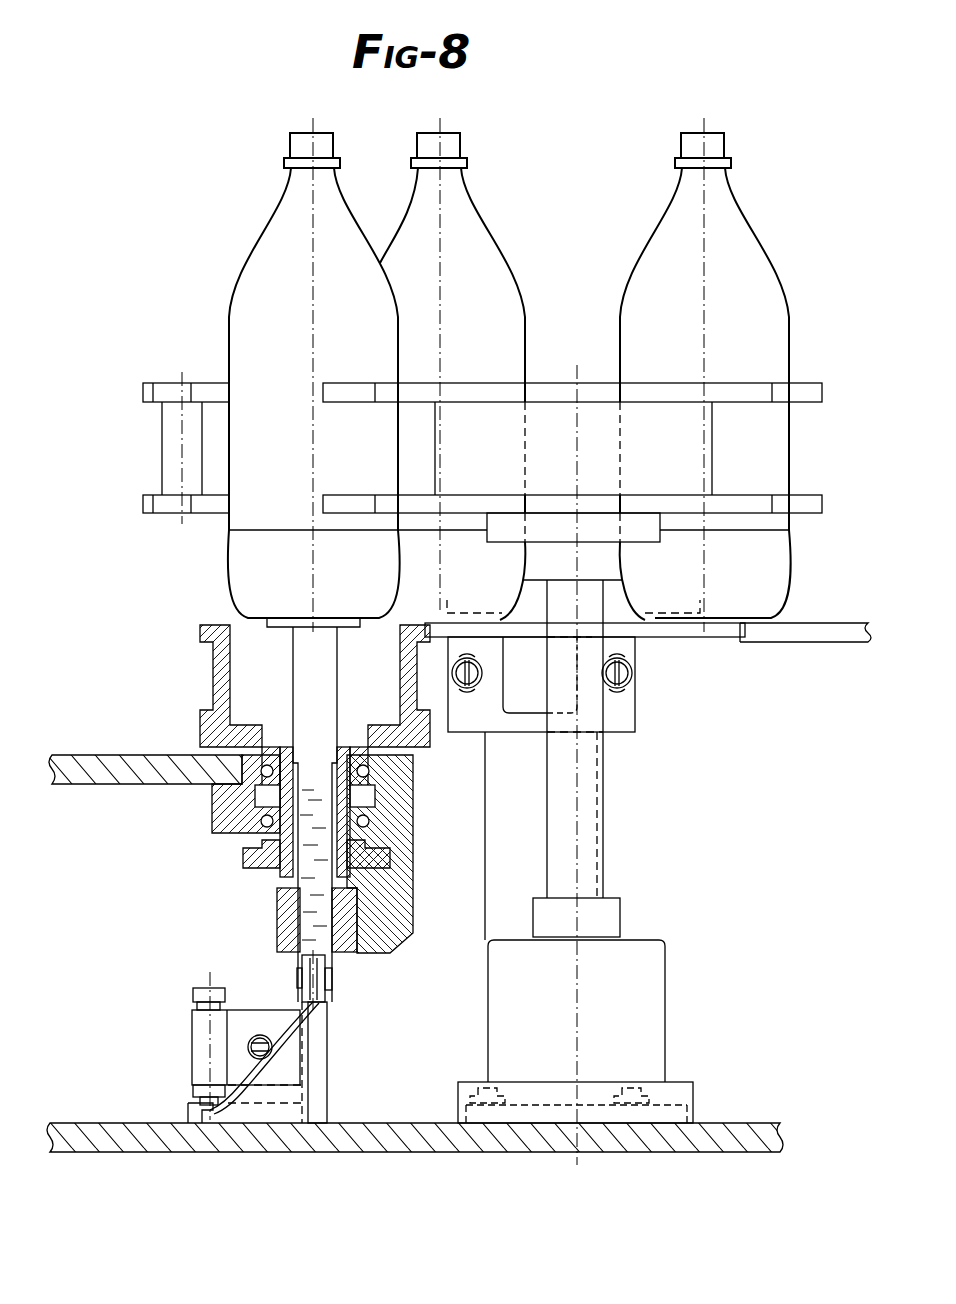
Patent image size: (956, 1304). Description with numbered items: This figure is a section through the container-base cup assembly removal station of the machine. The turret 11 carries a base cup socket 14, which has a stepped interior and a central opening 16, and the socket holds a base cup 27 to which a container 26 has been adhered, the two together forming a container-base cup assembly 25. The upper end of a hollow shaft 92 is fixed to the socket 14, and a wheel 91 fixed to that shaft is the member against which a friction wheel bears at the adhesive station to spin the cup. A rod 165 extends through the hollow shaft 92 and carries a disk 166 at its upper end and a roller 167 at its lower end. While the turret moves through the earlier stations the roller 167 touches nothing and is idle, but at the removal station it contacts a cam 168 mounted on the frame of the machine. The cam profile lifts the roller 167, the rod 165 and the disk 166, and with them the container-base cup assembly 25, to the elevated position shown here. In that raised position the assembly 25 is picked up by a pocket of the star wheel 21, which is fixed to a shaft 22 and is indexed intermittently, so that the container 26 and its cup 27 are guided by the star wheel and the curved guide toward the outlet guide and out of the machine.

The turret 11 is at (104, 750).
The base cup socket 14 is at (205, 651).
The central opening 16 is at (230, 683).
The star wheel 21 is at (146, 385).
The shaft 22 is at (590, 840).
The container-base cup assembly 25 is at (227, 309).
The container 26 is at (254, 346).
The base cup 27 is at (255, 565).
The wheel 91 is at (243, 856).
The hollow shaft 92 is at (283, 856).
The rod 165 is at (305, 900).
The disk 166 is at (308, 620).
The roller 167 is at (335, 972).
The cam 168 is at (320, 1060).